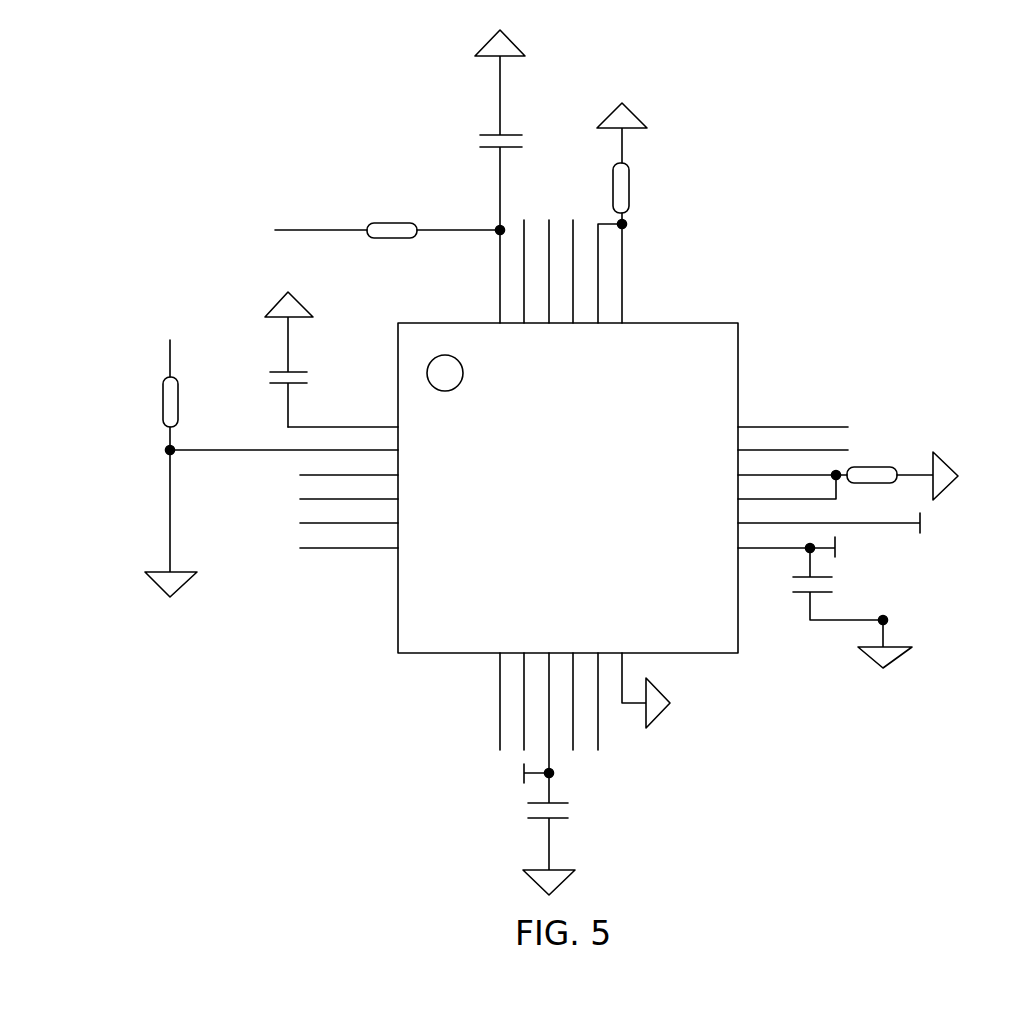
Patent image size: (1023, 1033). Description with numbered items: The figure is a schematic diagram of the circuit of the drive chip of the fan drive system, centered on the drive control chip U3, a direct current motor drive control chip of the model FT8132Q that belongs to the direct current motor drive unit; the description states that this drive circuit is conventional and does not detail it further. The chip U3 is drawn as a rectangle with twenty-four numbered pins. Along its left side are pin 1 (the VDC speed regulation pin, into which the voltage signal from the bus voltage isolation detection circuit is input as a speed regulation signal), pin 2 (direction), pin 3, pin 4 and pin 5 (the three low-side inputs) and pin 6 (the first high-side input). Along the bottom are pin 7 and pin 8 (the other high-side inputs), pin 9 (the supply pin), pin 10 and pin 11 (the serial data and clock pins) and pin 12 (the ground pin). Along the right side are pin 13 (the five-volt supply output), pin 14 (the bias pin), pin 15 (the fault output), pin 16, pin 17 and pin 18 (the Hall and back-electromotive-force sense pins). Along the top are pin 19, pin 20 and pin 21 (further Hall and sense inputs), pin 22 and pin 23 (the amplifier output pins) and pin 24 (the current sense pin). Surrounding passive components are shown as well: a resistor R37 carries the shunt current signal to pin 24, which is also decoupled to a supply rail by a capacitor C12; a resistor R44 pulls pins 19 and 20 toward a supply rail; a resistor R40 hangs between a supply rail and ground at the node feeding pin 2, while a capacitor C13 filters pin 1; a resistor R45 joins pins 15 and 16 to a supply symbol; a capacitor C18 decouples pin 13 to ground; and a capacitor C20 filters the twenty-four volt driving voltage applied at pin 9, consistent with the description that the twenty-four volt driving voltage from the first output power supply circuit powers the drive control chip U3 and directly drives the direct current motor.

The drive control chip U3 is at (576, 496).
The resistor R37 is at (387, 218).
The resistor R40 is at (155, 458).
The resistor R44 is at (637, 163).
The resistor R45 is at (897, 470).
The capacitor C12 is at (482, 130).
The capacitor C13 is at (270, 359).
The capacitor C18 is at (830, 608).
The capacitor C20 is at (546, 829).
The VDC pin 1 is at (343, 414).
The DIR pin 2 is at (284, 437).
The L_NU pin 3 is at (349, 462).
The L_NV pin 4 is at (349, 486).
The L_NW pin 5 is at (349, 510).
The H_PU pin 6 is at (349, 535).
The H_PV pin 7 is at (488, 702).
The H_PW pin 8 is at (512, 702).
The VCC pin 9 is at (537, 713).
The FG/RD (SDA) pin 10 is at (561, 702).
The SPEED (SCL) pin 11 is at (586, 702).
The VSS pin 12 is at (634, 690).
The VDD5 pin 13 is at (810, 540).
The HBIAS pin 14 is at (860, 516).
The A2M/FAULTN pin 15 is at (787, 486).
The A2P/HWP pin 16 is at (787, 462).
The EW/HWM pin 17 is at (793, 437).
The EV/HVM pin 18 is at (793, 414).
The A1P/HVP pin 19 is at (610, 273).
The A1M/HUM pin 20 is at (597, 273).
The EU/HUP pin 21 is at (561, 271).
The AOM pin 22 is at (537, 271).
The AOP pin 23 is at (512, 271).
The ICP pin 24 is at (488, 276).